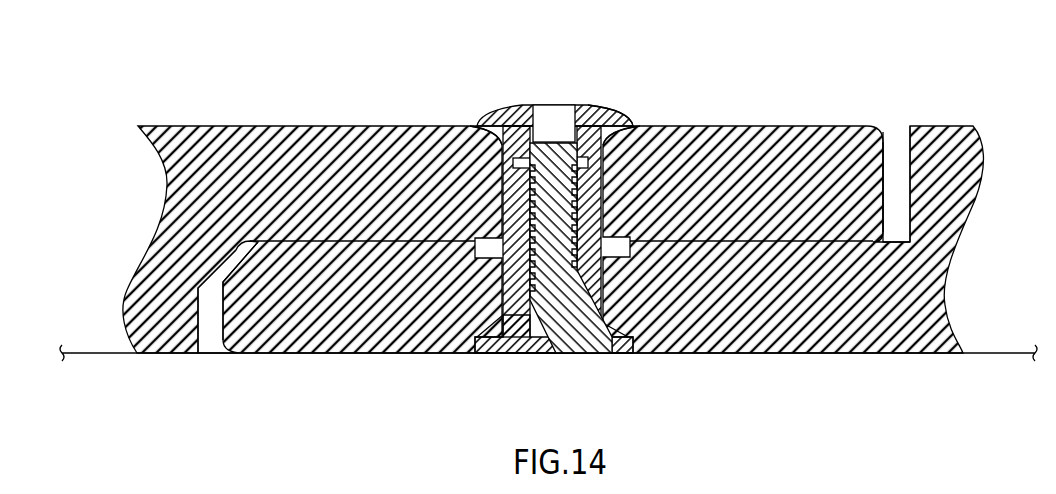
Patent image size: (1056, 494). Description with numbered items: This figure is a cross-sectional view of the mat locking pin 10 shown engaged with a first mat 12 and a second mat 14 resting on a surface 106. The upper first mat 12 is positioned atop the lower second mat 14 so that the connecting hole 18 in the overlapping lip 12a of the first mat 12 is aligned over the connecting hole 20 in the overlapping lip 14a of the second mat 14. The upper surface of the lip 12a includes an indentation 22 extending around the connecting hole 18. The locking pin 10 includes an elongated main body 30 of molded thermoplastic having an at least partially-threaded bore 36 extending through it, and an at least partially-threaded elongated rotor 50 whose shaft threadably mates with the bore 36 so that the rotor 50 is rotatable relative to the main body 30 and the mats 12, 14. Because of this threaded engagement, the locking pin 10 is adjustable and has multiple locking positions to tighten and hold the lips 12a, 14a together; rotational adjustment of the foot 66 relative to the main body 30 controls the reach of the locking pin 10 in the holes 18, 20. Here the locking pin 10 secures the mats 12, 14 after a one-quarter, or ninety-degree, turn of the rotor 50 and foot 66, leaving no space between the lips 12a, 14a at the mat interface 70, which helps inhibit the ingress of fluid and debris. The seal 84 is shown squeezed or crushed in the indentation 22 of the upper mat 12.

The mat locking pin 10 is at (545, 213).
The first mat 12 is at (165, 355).
The overlapping lip of the first mat 12a is at (740, 126).
The second mat 14 is at (948, 126).
The overlapping lip of the second mat 14a is at (278, 355).
The connecting hole 18 is at (610, 110).
The connecting hole 20 is at (600, 325).
The indentation 22 is at (487, 127).
The main body 30 is at (472, 102).
The bore 36 is at (520, 350).
The rotor 50 is at (512, 127).
The foot 66 is at (545, 356).
The mat interface 70 is at (870, 224).
The seal 84 is at (620, 127).
The surface 106 is at (987, 353).